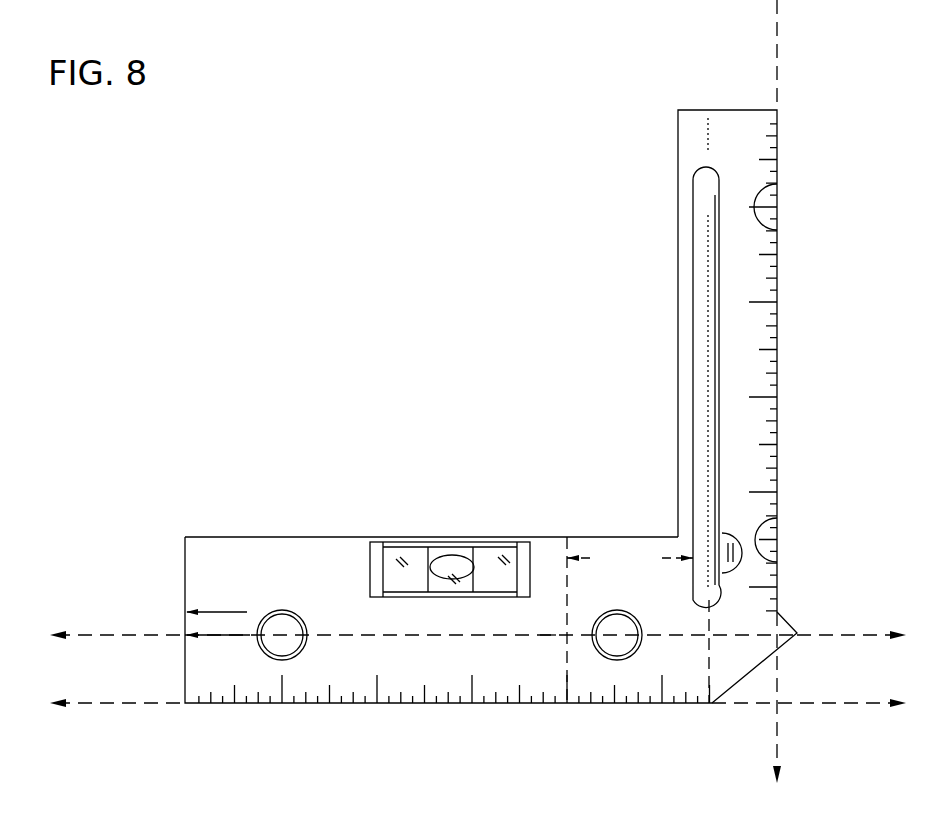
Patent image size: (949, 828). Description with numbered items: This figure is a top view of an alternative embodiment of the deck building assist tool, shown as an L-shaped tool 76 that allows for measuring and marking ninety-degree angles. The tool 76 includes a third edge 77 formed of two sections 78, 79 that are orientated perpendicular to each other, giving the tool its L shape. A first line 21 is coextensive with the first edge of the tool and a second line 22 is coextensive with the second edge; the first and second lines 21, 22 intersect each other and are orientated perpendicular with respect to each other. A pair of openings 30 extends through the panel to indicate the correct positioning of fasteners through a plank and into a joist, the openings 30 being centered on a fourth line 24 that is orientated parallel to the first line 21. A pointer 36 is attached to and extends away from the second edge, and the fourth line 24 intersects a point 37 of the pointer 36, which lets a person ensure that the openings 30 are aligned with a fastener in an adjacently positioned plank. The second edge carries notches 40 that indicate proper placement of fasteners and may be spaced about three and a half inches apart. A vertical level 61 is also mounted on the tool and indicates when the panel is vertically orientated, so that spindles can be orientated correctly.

The tool 76 is at (385, 364).
The third edge 77 is at (678, 470).
The section 78 is at (537, 703).
The section 79 is at (777, 304).
The vertical level 61 is at (733, 533).
The notches 40 is at (758, 204).
The openings 30 is at (284, 660).
The pointer 36 is at (788, 620).
The point 37 is at (802, 635).
The fourth line 24 is at (82, 633).
The first line 21 is at (856, 703).
The second line 22 is at (776, 730).